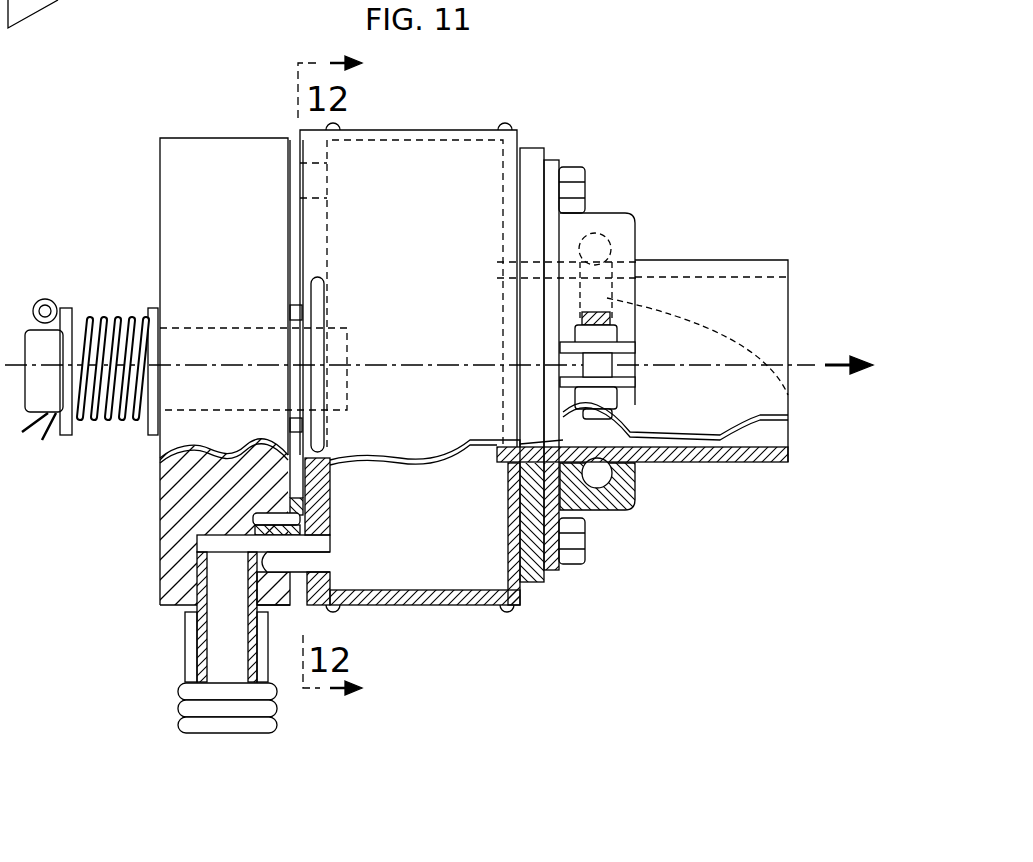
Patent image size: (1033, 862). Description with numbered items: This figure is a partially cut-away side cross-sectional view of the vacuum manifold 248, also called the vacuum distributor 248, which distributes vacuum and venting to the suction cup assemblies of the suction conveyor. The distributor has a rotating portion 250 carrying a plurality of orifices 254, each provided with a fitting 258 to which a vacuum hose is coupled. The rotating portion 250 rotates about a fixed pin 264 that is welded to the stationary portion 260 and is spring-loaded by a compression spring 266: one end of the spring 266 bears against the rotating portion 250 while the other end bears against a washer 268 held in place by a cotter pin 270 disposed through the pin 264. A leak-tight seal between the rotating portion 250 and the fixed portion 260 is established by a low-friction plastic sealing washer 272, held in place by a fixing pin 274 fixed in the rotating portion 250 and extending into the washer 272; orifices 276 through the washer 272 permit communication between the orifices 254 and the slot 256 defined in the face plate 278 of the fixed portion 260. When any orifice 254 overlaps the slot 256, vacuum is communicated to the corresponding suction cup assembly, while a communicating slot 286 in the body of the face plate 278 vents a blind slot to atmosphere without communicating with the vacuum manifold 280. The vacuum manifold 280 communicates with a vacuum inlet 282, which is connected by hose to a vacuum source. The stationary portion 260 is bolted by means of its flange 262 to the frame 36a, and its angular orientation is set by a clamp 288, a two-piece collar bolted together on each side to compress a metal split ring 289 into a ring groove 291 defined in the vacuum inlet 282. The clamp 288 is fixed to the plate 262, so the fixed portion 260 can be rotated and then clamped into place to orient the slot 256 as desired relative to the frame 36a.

The vacuum manifold 248 is at (428, 666).
The rotating portion 250 is at (158, 578).
The orifices 254 is at (247, 538).
The slot 256 is at (330, 558).
The fitting 258 is at (197, 642).
The stationary portion 260 is at (480, 600).
The flange 262 is at (558, 162).
The fixed pin 264 is at (33, 357).
The compression spring 266 is at (92, 422).
The washer 268 is at (65, 330).
The cotter pin 270 is at (47, 305).
The sealing washer 272 is at (297, 495).
The fixing pin 274 is at (265, 512).
The orifices 276 is at (302, 570).
The face plate 278 is at (318, 490).
The vacuum manifold 280 is at (445, 198).
The vacuum inlet 282 is at (712, 260).
The communicating slot 286 is at (318, 283).
The clamp 288 is at (600, 213).
The split ring 289 is at (600, 237).
The ring groove 291 is at (618, 262).
The frame 36a is at (532, 148).